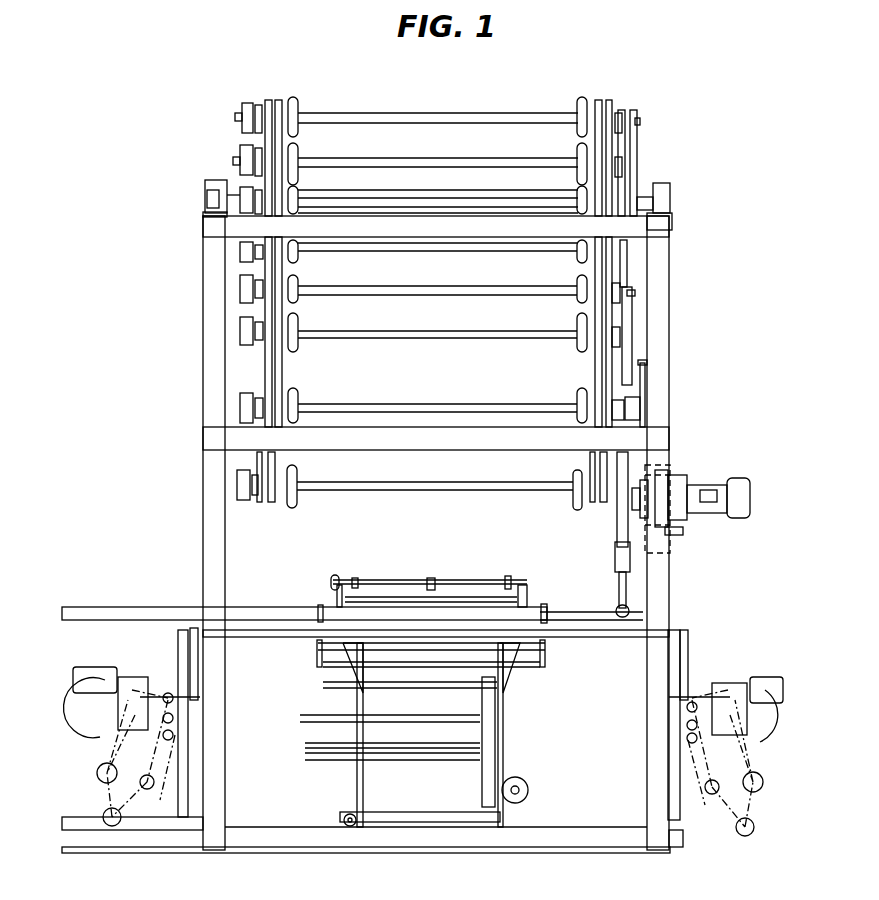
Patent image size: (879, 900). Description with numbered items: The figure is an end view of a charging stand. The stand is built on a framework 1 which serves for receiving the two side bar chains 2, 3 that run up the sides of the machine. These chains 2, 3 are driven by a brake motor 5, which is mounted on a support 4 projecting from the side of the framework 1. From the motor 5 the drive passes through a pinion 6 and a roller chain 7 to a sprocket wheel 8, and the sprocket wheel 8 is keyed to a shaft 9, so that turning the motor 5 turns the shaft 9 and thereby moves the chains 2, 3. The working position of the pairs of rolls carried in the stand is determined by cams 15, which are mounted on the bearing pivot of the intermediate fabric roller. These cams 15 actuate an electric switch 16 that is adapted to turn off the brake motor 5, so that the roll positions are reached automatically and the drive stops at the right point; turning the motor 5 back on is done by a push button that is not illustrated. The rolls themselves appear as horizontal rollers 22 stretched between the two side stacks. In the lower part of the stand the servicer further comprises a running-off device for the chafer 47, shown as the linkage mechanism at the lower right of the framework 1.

The framework 1 is at (660, 270).
The side bar chain 2 is at (607, 105).
The side bar chain 3 is at (280, 100).
The support 4 is at (672, 535).
The brake motor 5 is at (743, 496).
The pinion 6 is at (640, 508).
The roller chain 7 is at (640, 466).
The sprocket wheel 8 is at (642, 370).
The shaft 9 is at (550, 418).
The cam 15 is at (640, 294).
The electric switch 16 is at (640, 412).
The roller 22 is at (473, 335).
The chafer 47 is at (697, 678).